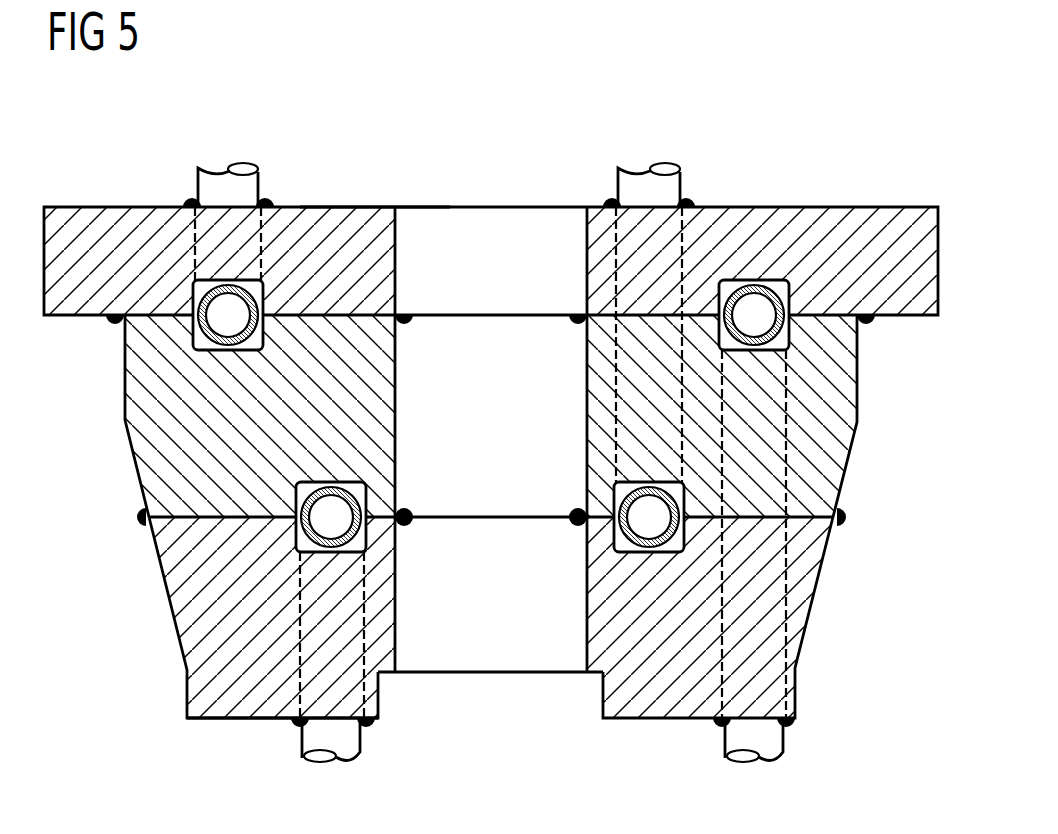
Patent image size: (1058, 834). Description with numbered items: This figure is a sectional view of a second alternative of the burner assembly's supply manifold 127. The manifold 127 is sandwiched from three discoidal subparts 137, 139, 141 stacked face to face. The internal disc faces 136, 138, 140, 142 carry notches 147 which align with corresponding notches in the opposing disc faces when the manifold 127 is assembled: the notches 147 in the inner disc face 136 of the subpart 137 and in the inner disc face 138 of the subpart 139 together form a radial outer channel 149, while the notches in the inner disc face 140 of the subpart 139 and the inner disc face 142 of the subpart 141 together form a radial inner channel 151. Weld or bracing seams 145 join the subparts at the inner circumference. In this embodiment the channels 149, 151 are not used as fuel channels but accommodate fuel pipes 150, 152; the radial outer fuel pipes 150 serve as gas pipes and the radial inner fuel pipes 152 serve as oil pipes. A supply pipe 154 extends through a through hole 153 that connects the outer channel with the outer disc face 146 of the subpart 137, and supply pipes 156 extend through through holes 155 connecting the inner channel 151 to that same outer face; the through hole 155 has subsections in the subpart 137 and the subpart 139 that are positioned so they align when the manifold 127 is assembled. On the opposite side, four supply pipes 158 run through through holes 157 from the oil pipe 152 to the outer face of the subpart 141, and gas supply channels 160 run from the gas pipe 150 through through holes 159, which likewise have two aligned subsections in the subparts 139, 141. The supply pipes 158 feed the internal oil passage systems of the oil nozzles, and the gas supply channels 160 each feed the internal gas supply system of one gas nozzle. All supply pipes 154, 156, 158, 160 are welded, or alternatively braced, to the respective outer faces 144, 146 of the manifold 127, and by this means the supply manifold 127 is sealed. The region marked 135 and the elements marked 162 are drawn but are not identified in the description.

The supply manifold 127 is at (814, 118).
The flow channel 135 is at (491, 634).
The inner disc face 136 is at (123, 346).
The discoidal subpart 137 is at (906, 208).
The inner disc face 138 is at (396, 293).
The discoidal subpart 139 is at (845, 441).
The inner disc face 140 is at (185, 525).
The discoidal subpart 141 is at (835, 561).
The inner disc face 142 is at (182, 508).
The outer face 144 is at (378, 205).
The weld or bracing seams 145 is at (570, 328).
The outer disc face 146 is at (220, 722).
The notches 147 is at (193, 300).
The radial outer channel 149 is at (265, 343).
The radial outer fuel pipes 150 is at (228, 352).
The radial inner channel 151 is at (306, 484).
The radial inner fuel pipes 152 is at (352, 484).
The through holes 153 is at (263, 250).
The supply pipe 154 is at (218, 182).
The through holes 155 is at (614, 268).
The supply pipes 156 is at (638, 180).
The through holes 157 is at (367, 614).
The supply pipes 158 is at (347, 752).
The through holes 159 is at (790, 612).
The gas supply channels 160 is at (767, 752).
The sealing rings 162 is at (185, 198).